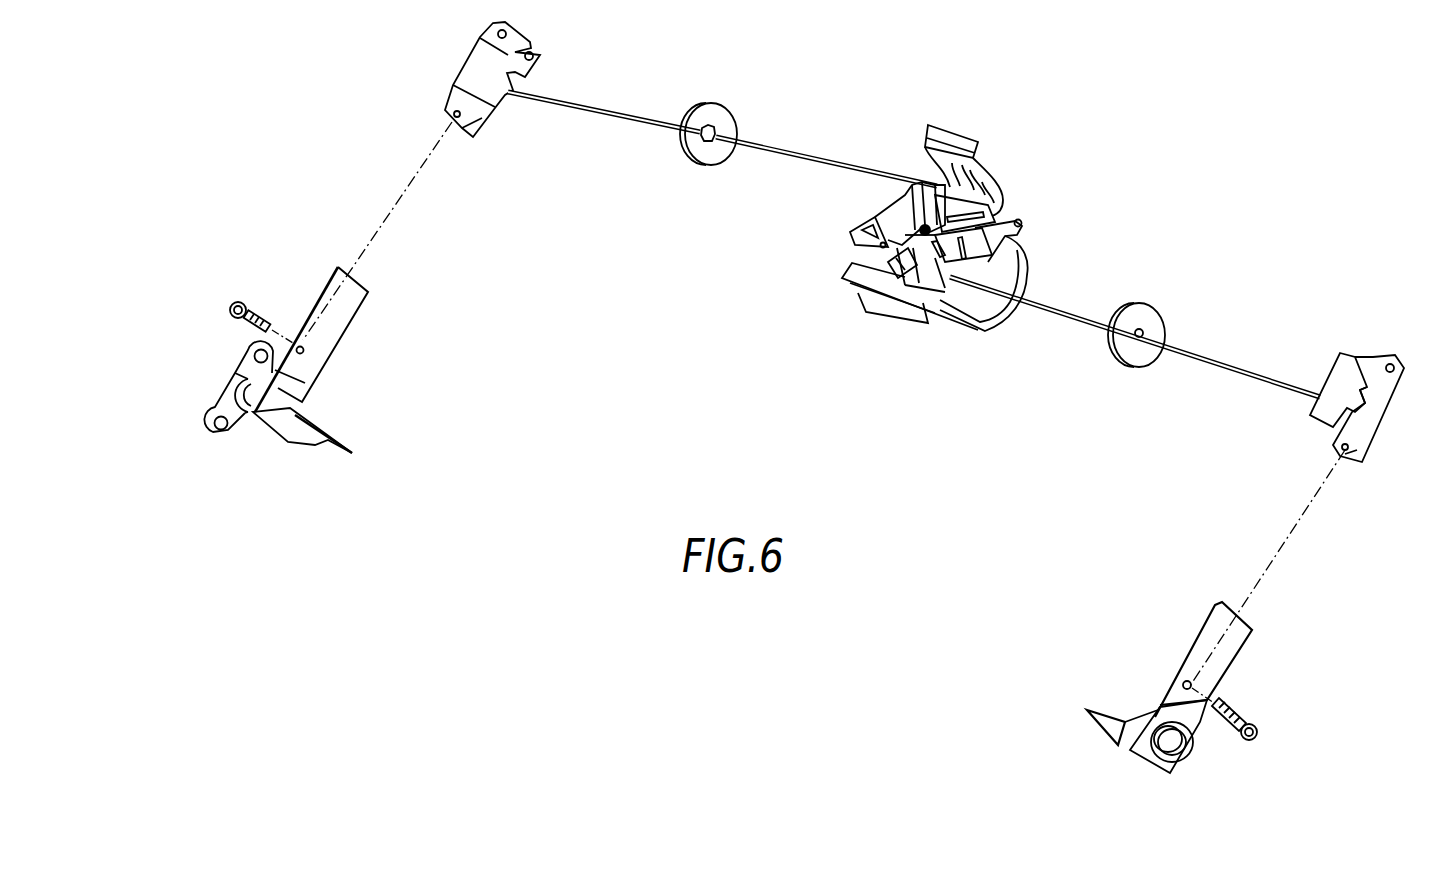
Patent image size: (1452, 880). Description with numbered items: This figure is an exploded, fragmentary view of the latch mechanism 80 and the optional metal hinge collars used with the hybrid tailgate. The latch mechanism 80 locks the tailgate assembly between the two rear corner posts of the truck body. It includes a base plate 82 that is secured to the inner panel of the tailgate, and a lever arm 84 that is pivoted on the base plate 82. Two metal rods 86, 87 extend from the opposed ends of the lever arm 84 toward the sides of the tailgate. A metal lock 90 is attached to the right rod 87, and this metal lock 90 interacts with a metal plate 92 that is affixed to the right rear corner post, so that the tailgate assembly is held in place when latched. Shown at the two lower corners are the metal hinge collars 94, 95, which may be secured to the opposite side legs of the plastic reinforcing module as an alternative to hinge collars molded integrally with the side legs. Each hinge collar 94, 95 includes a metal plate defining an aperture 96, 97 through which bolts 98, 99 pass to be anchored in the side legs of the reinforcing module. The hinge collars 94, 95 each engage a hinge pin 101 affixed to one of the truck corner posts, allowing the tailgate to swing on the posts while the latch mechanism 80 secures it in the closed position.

The latch mechanism 80 is at (1040, 122).
The base plate 82 is at (1030, 275).
The lever arm 84 is at (878, 217).
The metal rod 86 is at (812, 152).
The metal rod 87 is at (1224, 358).
The metal lock 90 is at (1350, 352).
The metal plate 92 is at (1392, 392).
The metal hinge collar 94 is at (368, 300).
The metal hinge collar 95 is at (1198, 640).
The aperture 96 is at (301, 344).
The aperture 97 is at (1183, 683).
The bolt 98 is at (240, 300).
The bolt 99 is at (1252, 714).
The hinge pin 101 is at (238, 370).